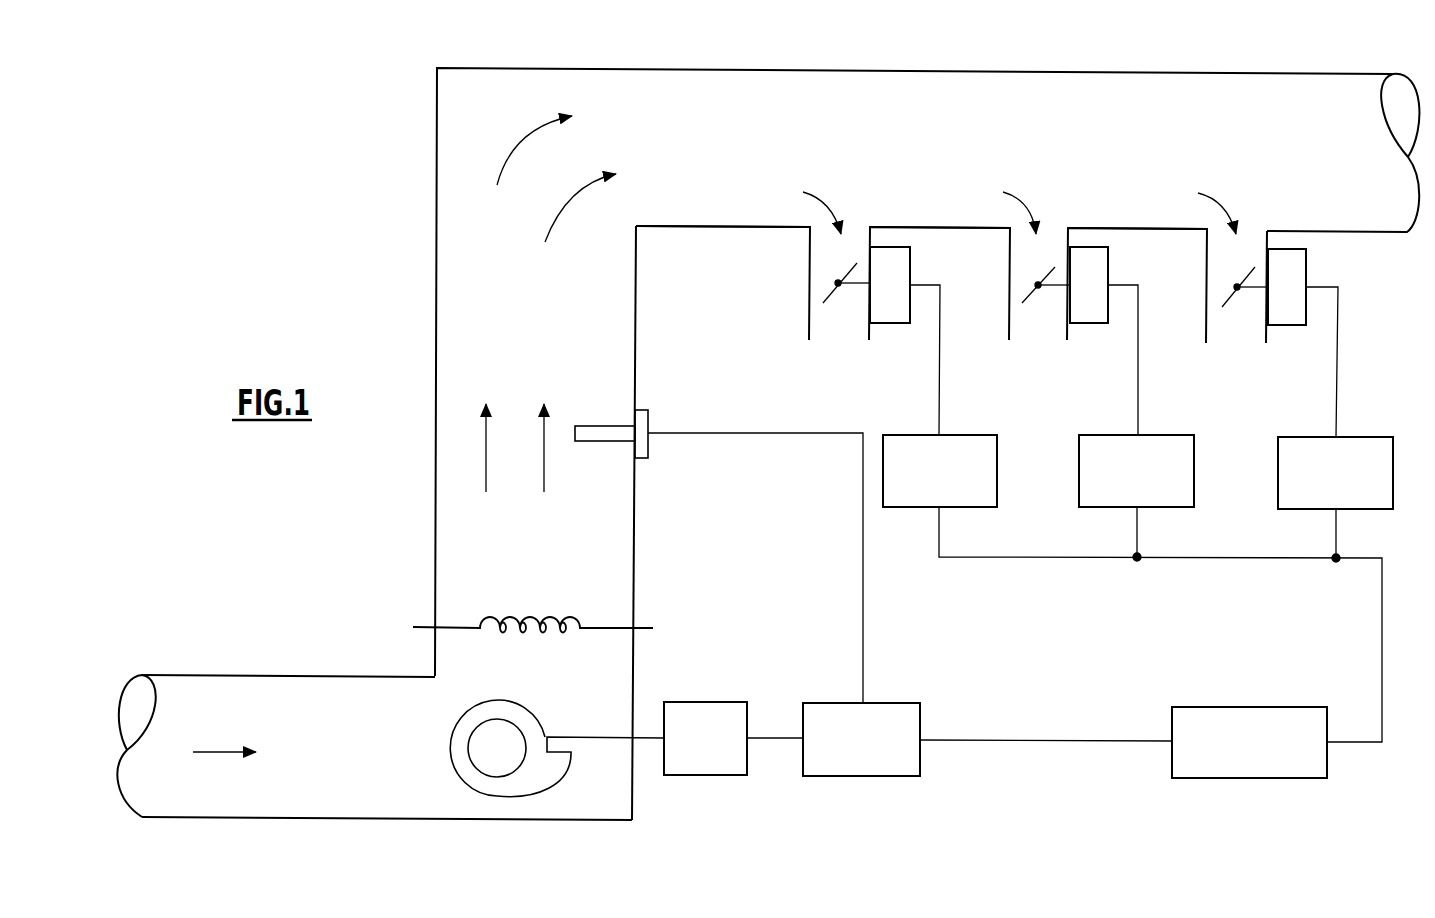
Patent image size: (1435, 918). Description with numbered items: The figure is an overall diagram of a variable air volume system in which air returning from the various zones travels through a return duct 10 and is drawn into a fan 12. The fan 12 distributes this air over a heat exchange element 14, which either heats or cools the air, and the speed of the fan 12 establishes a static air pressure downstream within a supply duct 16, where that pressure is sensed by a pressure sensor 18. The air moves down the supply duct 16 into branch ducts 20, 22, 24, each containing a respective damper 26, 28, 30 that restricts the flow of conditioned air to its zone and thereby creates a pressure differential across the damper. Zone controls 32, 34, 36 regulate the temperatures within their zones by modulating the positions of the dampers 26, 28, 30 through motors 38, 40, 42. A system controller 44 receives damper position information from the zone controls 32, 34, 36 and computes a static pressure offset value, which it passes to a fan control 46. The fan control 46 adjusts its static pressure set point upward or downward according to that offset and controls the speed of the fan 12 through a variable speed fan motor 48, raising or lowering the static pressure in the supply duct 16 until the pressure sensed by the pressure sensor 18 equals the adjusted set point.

The return duct 10 is at (247, 820).
The fan 12 is at (540, 778).
The heat exchange element 14 is at (640, 628).
The supply duct 16 is at (620, 563).
The pressure sensor 18 is at (649, 413).
The branch duct 20 is at (808, 323).
The branch duct 22 is at (1008, 324).
The branch duct 24 is at (1205, 325).
The damper 26 is at (830, 295).
The damper 28 is at (1030, 295).
The damper 30 is at (1228, 297).
The zone control 32 is at (966, 434).
The zone control 34 is at (1166, 435).
The zone control 36 is at (1364, 437).
The motor 38 is at (913, 261).
The motor 40 is at (1110, 262).
The motor 42 is at (1308, 264).
The system controller 44 is at (1278, 707).
The fan control 46 is at (891, 703).
The variable speed fan motor 48 is at (702, 702).